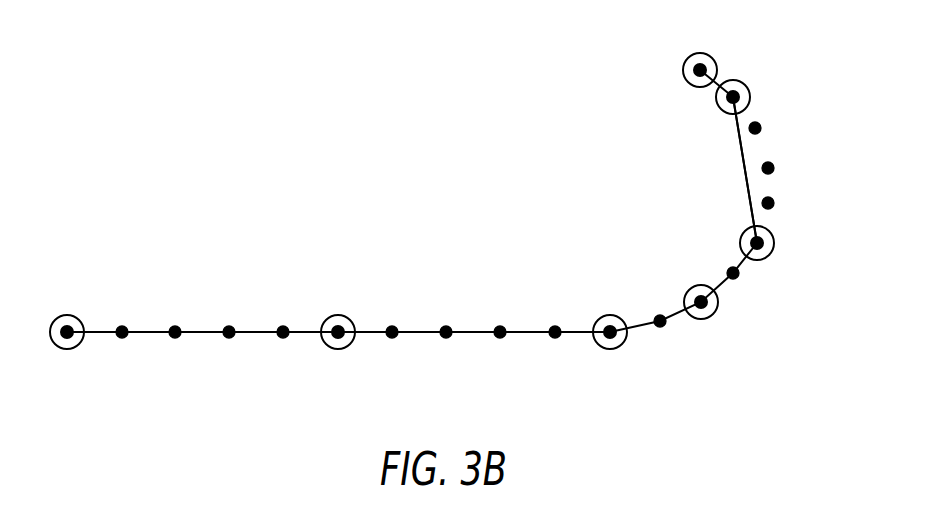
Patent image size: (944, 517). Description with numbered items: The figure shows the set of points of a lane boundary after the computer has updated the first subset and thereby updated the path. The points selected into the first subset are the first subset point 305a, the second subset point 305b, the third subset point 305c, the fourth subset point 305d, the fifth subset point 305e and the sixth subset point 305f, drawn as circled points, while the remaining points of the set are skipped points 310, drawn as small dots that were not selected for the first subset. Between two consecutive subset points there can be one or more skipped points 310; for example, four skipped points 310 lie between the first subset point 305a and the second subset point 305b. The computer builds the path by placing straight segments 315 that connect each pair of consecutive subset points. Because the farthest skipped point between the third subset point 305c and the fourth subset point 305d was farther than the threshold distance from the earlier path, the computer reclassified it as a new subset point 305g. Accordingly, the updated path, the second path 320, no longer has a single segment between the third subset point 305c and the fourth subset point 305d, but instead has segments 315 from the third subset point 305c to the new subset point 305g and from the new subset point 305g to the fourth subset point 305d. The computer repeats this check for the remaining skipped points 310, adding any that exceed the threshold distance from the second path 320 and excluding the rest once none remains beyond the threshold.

The first subset point 305a is at (67, 315).
The second subset point 305b is at (338, 315).
The third subset point 305c is at (610, 349).
The fourth subset point 305d is at (774, 243).
The fifth subset point 305e is at (747, 87).
The sixth subset point 305f is at (710, 52).
The new subset point 305g is at (713, 315).
The skipped point 310 is at (283, 326).
The segment 315 is at (305, 333).
The second path 320 is at (743, 177).